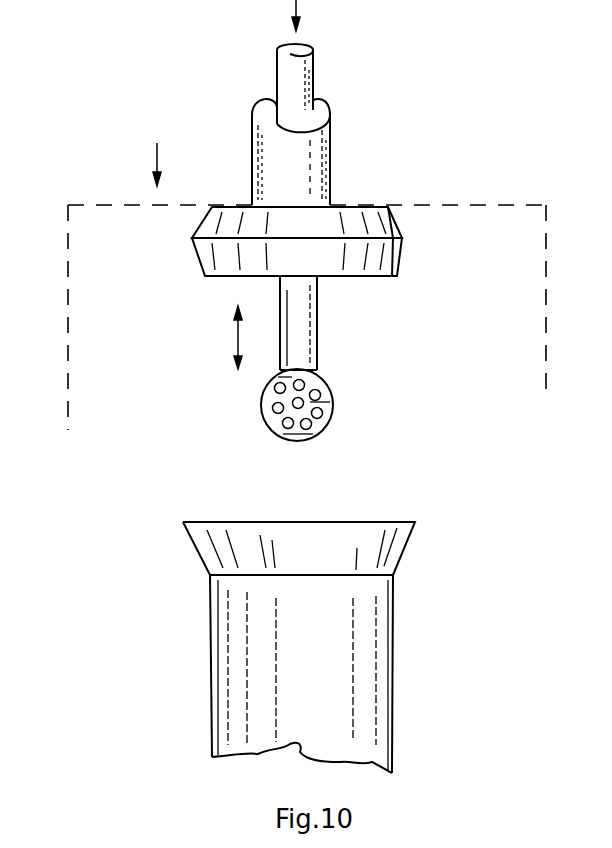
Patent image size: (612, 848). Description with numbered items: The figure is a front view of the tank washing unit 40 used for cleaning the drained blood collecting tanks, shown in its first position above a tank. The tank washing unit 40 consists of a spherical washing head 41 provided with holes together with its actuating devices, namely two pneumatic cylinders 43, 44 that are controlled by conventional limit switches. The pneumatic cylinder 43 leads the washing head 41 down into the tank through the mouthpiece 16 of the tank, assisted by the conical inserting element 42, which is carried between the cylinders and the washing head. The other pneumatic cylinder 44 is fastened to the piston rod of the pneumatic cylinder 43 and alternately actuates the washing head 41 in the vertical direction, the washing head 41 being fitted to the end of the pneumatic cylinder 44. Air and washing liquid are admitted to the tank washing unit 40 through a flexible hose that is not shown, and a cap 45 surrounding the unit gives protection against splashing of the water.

The mouthpiece 16 is at (357, 548).
The tank washing unit 40 is at (400, 233).
The spherical washing head 41 is at (333, 395).
The conical inserting element 42 is at (378, 265).
The pneumatic cylinder 43 is at (314, 163).
The pneumatic cylinder 44 is at (297, 78).
The cap 45 is at (68, 226).